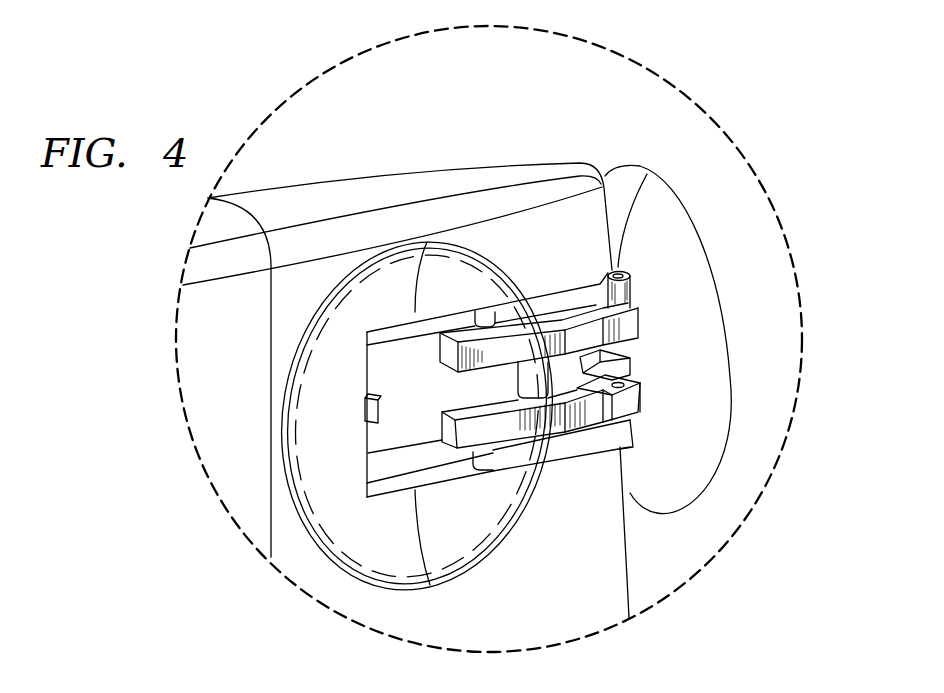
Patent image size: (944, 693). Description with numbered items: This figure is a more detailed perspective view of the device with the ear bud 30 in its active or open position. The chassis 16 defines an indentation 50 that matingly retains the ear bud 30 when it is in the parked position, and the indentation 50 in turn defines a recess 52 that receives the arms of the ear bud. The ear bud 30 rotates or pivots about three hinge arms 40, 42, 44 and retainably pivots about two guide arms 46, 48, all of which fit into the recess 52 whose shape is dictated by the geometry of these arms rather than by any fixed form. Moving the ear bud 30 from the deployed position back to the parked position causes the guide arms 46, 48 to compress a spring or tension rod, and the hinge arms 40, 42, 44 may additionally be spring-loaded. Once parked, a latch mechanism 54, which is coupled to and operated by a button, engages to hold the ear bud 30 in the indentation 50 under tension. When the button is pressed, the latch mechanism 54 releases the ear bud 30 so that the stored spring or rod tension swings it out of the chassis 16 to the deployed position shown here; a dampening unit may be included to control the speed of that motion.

The chassis 16 is at (508, 163).
The ear bud 30 is at (658, 496).
The hinge arm 40 is at (628, 287).
The hinge arm 42 is at (606, 358).
The hinge arm 44 is at (632, 435).
The guide arm 46 is at (633, 323).
The guide arm 48 is at (633, 403).
The indentation 50 is at (357, 306).
The recess 52 is at (382, 368).
The latch mechanism 54 is at (373, 425).